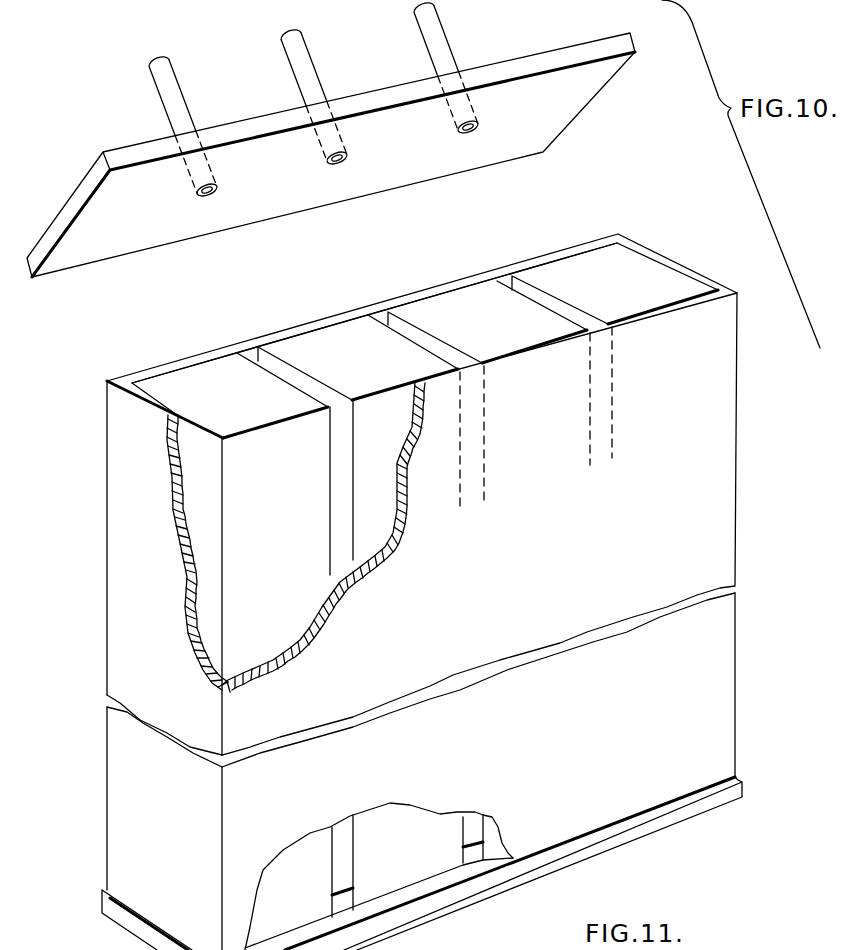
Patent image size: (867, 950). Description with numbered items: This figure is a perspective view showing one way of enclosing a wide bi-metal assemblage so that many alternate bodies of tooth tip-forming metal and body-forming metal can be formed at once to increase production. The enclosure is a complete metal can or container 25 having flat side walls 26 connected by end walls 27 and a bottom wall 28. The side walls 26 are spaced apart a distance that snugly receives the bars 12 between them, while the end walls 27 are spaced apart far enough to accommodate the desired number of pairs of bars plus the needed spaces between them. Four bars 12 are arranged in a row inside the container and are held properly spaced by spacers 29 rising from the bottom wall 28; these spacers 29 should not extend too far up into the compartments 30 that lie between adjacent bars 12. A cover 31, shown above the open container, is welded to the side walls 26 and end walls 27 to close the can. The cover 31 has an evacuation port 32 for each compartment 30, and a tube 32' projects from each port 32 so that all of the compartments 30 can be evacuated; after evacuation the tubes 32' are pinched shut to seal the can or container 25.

In FIG. 10, the cover 31 is at (379, 92).
In FIG. 10, the tube 32' is at (329, 69).
In FIG. 10, the evacuation port 32 is at (352, 135).
In FIG. 11, the bar 12 is at (192, 380).
In FIG. 11, the can or container 25 is at (695, 457).
In FIG. 11, the side wall 26 is at (378, 317).
In FIG. 11, the end wall 27 is at (687, 267).
In FIG. 11, the bottom wall 28 is at (430, 888).
In FIG. 11, the spacer 29 is at (472, 843).
In FIG. 11, the compartment 30 is at (310, 385).